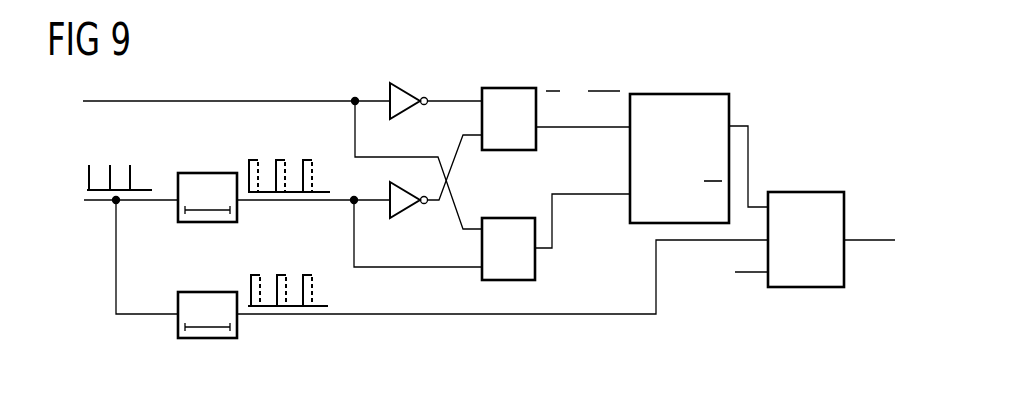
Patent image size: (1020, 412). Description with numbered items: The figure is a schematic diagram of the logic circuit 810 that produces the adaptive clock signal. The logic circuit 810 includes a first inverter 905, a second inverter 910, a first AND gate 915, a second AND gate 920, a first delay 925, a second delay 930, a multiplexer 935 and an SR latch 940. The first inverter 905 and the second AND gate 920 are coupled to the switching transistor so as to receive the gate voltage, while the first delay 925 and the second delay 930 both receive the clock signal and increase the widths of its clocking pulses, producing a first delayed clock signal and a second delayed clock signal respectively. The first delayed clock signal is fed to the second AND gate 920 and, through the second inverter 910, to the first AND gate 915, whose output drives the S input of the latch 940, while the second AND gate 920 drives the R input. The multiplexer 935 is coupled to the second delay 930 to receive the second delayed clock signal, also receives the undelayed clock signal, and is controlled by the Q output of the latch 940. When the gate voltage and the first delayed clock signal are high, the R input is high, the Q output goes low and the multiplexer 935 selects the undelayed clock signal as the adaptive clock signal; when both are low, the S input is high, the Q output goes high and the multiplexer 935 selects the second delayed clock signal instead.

The logic circuit 810 is at (790, 98).
The first inverter 905 is at (409, 84).
The second inverter 910 is at (410, 206).
The first AND gate 915 is at (507, 88).
The second AND gate 920 is at (537, 274).
The first delay 925 is at (207, 173).
The second delay 930 is at (207, 292).
The multiplexer 935 is at (806, 192).
The SR latch 940 is at (681, 94).